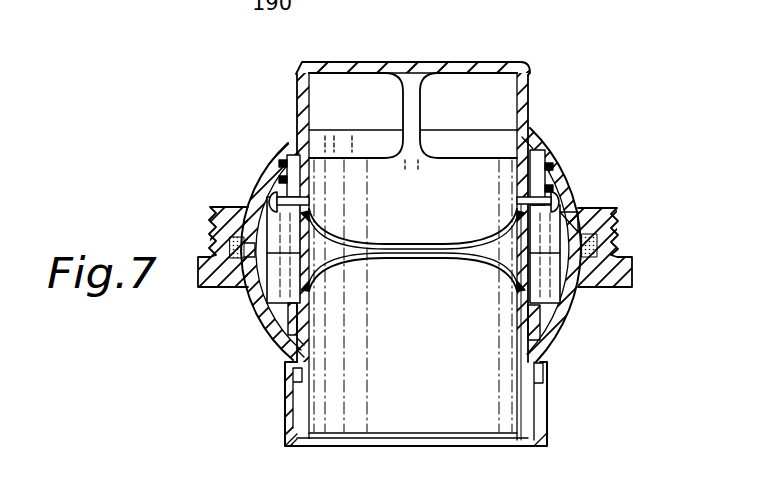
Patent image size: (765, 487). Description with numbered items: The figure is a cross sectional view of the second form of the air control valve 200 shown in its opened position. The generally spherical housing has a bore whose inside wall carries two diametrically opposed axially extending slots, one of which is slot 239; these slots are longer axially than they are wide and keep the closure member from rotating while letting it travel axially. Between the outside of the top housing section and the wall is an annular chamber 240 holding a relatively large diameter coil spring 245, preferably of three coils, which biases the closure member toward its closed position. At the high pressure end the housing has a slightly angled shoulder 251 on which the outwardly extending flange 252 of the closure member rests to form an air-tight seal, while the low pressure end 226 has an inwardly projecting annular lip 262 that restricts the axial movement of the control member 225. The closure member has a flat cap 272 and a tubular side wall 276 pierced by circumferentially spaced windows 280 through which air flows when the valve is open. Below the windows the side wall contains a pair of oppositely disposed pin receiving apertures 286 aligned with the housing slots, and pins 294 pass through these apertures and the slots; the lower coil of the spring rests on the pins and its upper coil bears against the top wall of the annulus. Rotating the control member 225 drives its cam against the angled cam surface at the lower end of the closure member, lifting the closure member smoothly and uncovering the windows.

The air control valve 200 is at (260, 327).
The control member 225 is at (533, 403).
The low pressure end 226 is at (296, 341).
The axially extending slot 239 is at (527, 262).
The annular chamber 240 is at (547, 172).
The coil spring 245 is at (290, 148).
The angled shoulder 251 is at (538, 130).
The flange 252 is at (533, 65).
The annular lip 262 is at (296, 356).
The cap 272 is at (438, 72).
The tubular side wall 276 is at (298, 97).
The windows 280 is at (356, 110).
The pin receiving apertures 286 is at (313, 199).
The pins 294 is at (272, 203).